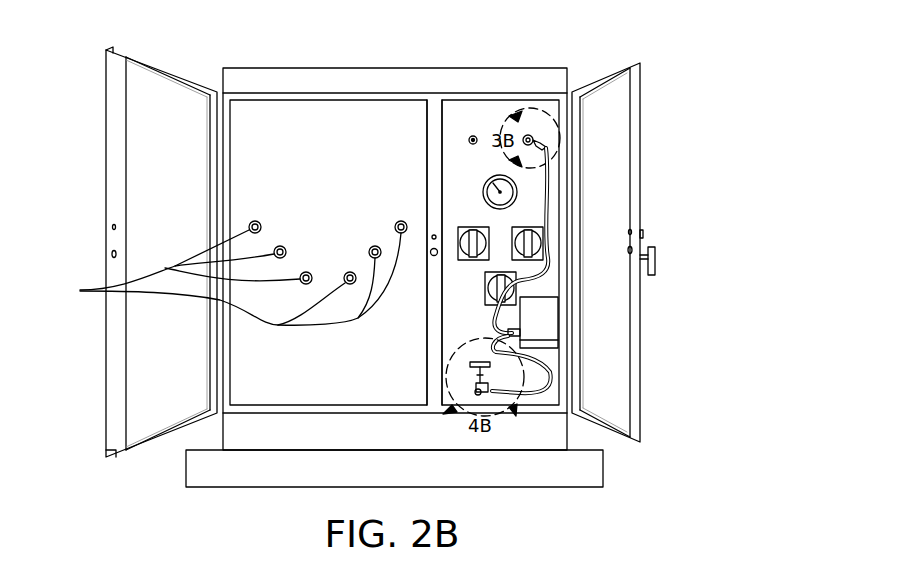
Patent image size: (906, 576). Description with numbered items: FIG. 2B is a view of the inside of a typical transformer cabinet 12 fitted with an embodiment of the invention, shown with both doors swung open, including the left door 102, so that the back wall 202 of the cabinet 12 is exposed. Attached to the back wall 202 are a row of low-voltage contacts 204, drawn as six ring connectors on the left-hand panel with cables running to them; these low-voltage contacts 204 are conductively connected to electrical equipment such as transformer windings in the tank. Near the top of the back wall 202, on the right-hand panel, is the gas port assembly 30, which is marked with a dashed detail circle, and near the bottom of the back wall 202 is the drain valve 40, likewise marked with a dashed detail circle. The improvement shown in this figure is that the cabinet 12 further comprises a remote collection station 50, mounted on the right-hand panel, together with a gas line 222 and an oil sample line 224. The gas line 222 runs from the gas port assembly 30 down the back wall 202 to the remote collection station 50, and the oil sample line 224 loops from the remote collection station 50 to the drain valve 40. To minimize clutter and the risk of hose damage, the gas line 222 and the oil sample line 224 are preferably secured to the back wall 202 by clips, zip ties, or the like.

The transformer cabinet 12 is at (270, 58).
The left door 102 is at (150, 156).
The back wall 202 is at (310, 189).
The low-voltage contacts 204 is at (110, 290).
The gas port assembly 30 is at (536, 126).
The gas line 222 is at (550, 192).
The remote collection station 50 is at (547, 319).
The drain valve 40 is at (506, 378).
The oil sample line 224 is at (545, 391).